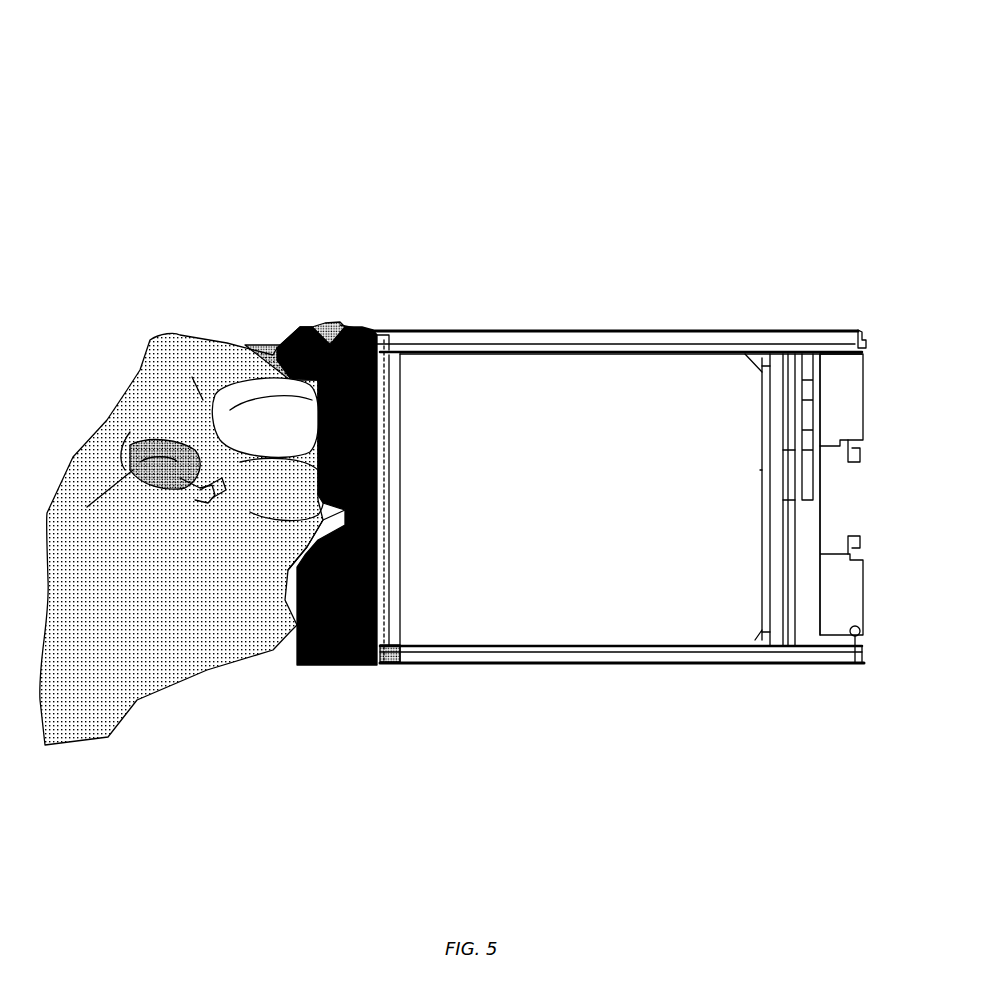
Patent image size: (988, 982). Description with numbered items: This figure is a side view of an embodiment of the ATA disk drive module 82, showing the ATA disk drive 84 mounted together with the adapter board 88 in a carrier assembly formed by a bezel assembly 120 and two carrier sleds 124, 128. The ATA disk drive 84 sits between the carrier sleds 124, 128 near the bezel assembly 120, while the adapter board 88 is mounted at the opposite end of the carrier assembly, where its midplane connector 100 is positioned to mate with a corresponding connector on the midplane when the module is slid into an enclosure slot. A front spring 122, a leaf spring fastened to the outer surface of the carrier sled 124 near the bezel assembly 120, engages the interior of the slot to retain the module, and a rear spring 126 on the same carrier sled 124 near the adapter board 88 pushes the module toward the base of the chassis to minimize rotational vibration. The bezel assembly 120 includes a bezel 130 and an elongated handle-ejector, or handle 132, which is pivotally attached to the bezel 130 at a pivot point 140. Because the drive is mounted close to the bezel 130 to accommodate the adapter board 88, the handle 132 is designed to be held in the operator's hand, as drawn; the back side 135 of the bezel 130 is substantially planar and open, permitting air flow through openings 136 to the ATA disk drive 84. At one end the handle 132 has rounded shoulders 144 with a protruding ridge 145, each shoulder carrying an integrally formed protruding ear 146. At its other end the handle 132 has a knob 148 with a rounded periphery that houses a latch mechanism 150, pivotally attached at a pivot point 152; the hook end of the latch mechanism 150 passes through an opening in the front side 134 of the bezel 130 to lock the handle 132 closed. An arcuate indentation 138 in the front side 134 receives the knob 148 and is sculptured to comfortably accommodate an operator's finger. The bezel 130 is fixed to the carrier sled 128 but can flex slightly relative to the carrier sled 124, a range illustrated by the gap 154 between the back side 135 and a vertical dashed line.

The ATA disk drive module 82 is at (113, 90).
The ATA disk drive 84 is at (568, 522).
The adapter board 88 is at (817, 318).
The midplane connector 100 is at (763, 385).
The bezel assembly 120 is at (368, 232).
The front spring 122 is at (362, 327).
The carrier sled 124 is at (512, 338).
The rear spring 126 is at (823, 328).
The carrier sled 128 is at (540, 660).
The bezel 130 is at (377, 378).
The handle-ejector 132 is at (203, 418).
The front side of the bezel 134 is at (298, 645).
The back side of the bezel 135 is at (390, 625).
The openings 136 is at (317, 437).
The arcuate indentation 138 is at (378, 497).
The pivot point 140 is at (315, 348).
The rounded shoulder 144 is at (276, 347).
The protruding ridge 145 is at (302, 328).
The protruding ear 146 is at (333, 318).
The knob 148 is at (182, 487).
The latch mechanism 150 is at (143, 452).
The pivot point 152 is at (188, 483).
The gap 154 is at (378, 393).